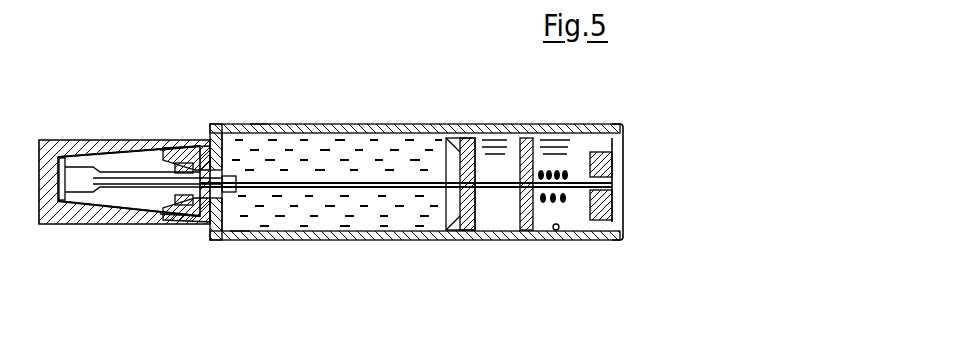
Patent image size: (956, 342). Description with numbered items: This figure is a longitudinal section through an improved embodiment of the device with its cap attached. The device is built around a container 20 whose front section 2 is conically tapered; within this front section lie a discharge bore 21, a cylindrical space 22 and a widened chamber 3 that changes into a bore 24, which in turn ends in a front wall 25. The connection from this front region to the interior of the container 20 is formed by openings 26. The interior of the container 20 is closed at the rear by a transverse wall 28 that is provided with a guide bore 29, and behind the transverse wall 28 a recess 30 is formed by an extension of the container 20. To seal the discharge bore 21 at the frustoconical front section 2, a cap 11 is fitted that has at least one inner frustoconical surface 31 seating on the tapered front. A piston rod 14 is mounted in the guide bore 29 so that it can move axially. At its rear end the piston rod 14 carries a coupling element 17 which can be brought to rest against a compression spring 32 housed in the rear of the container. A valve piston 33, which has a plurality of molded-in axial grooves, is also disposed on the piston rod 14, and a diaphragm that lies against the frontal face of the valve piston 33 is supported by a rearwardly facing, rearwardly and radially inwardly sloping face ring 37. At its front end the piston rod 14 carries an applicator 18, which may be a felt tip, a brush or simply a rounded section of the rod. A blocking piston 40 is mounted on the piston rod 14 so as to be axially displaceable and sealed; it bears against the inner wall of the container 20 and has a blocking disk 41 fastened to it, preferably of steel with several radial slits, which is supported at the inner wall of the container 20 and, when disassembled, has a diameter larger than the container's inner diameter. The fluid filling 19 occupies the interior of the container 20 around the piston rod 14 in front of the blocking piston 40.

The front section 2 is at (142, 142).
The widened chamber 3 is at (167, 153).
The cap 11 is at (77, 224).
The piston rod 14 is at (333, 188).
The coupling element 17 is at (623, 222).
The applicator 18 is at (137, 224).
The medicament filling 19 is at (379, 240).
The container 20 is at (365, 124).
The discharge bore 21 is at (84, 172).
The cylindrical space 22 is at (150, 224).
The bore 24 is at (187, 224).
The front wall 25 is at (241, 240).
The openings 26 is at (292, 88).
The transverse wall 28 is at (523, 124).
The guide bore 29 is at (553, 124).
The recess 30 is at (576, 240).
The inner frustoconical surface 31 is at (165, 150).
The compression spring 32 is at (556, 232).
The valve piston 33 is at (233, 175).
The face ring 37 is at (185, 224).
The blocking piston 40 is at (451, 240).
The blocking disk 41 is at (482, 240).